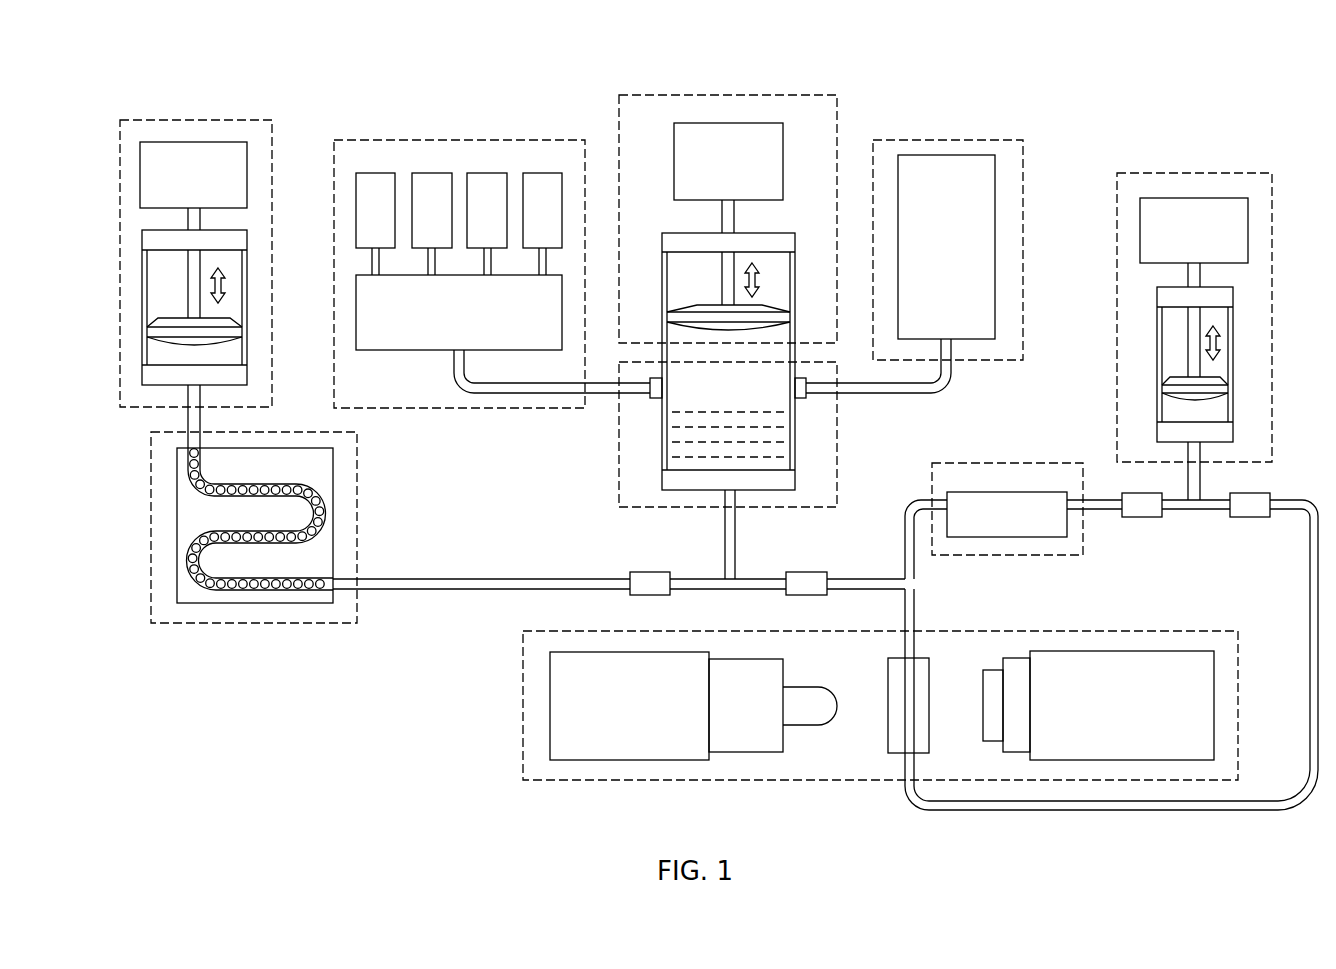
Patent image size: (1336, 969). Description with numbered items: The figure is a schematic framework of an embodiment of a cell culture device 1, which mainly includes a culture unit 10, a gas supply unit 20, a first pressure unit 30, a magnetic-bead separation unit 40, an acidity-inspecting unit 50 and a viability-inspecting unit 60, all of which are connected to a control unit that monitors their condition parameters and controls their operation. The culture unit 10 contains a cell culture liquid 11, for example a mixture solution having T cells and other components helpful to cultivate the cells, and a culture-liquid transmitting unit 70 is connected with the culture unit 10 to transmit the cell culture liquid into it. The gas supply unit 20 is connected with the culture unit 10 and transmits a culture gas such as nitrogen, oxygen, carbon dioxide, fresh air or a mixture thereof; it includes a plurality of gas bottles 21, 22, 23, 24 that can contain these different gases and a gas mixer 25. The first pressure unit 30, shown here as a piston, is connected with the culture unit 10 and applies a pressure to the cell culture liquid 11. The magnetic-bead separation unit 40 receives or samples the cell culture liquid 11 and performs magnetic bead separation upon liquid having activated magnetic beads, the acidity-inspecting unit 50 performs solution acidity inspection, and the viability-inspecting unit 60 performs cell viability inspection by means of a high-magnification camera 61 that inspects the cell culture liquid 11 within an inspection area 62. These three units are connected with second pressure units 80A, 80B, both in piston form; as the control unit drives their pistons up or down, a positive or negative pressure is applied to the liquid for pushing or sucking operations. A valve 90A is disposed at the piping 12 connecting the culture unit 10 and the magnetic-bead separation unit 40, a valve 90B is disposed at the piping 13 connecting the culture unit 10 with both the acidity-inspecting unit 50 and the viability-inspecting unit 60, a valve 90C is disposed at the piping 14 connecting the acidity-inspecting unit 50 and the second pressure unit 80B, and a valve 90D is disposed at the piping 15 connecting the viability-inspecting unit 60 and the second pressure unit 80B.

The cell culture device 1 is at (86, 60).
The culture unit 10 is at (739, 370).
The cell culture liquid 11 is at (677, 436).
The piping 12 is at (480, 595).
The piping 13 is at (857, 592).
The piping 14 is at (1100, 513).
The piping 15 is at (1307, 697).
The gas supply unit 20 is at (492, 253).
The gas bottle 21 is at (375, 210).
The gas bottle 22 is at (432, 210).
The gas bottle 23 is at (487, 210).
The gas bottle 24 is at (542, 210).
The gas mixer 25 is at (459, 312).
The first pressure unit 30 is at (705, 95).
The magnetic-bead separation unit 40 is at (358, 505).
The acidity-inspecting unit 50 is at (993, 463).
The viability-inspecting unit 60 is at (880, 684).
The camera 61 is at (803, 688).
The inspection area 62 is at (890, 702).
The culture-liquid transmitting unit 70 is at (938, 140).
The second pressure unit 80A is at (196, 120).
The second pressure unit 80B is at (1178, 173).
The valve 90A is at (640, 572).
The valve 90B is at (810, 572).
The valve 90C is at (1140, 520).
The valve 90D is at (1247, 520).